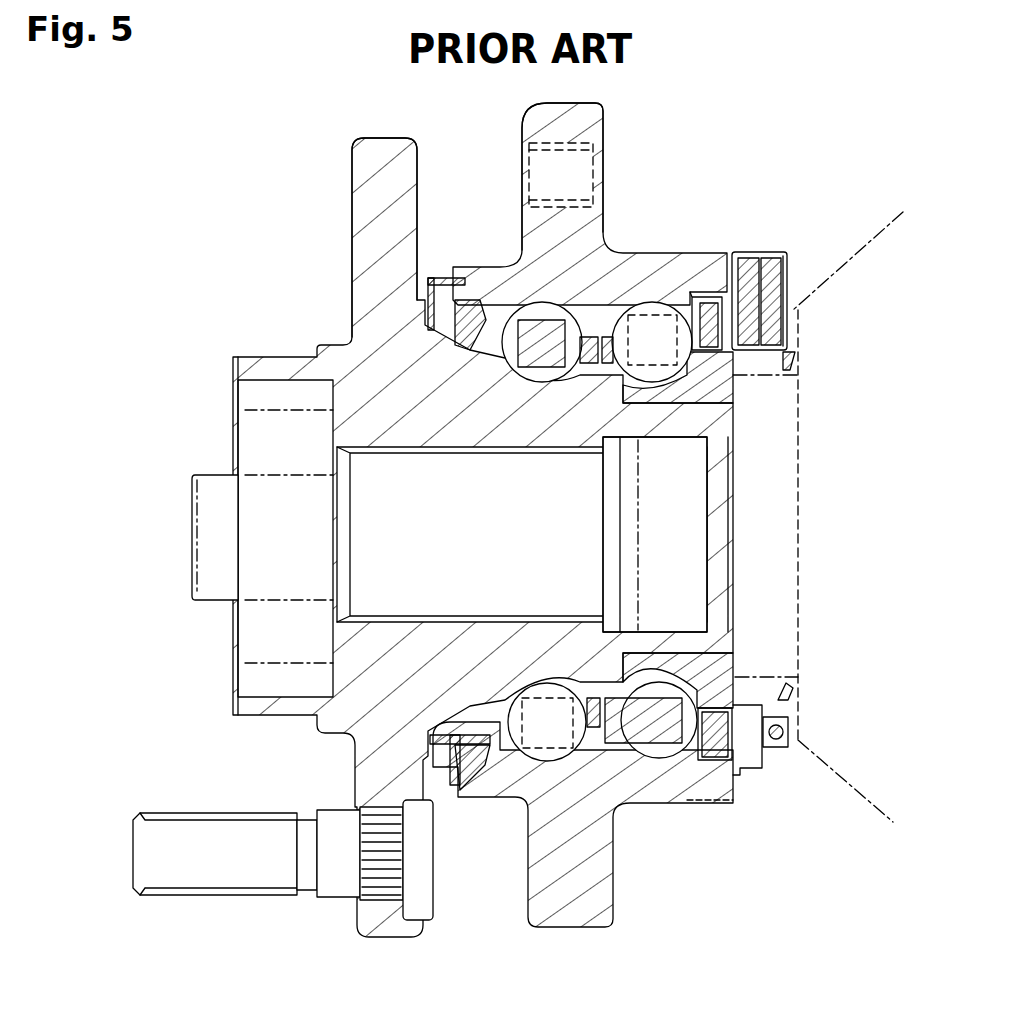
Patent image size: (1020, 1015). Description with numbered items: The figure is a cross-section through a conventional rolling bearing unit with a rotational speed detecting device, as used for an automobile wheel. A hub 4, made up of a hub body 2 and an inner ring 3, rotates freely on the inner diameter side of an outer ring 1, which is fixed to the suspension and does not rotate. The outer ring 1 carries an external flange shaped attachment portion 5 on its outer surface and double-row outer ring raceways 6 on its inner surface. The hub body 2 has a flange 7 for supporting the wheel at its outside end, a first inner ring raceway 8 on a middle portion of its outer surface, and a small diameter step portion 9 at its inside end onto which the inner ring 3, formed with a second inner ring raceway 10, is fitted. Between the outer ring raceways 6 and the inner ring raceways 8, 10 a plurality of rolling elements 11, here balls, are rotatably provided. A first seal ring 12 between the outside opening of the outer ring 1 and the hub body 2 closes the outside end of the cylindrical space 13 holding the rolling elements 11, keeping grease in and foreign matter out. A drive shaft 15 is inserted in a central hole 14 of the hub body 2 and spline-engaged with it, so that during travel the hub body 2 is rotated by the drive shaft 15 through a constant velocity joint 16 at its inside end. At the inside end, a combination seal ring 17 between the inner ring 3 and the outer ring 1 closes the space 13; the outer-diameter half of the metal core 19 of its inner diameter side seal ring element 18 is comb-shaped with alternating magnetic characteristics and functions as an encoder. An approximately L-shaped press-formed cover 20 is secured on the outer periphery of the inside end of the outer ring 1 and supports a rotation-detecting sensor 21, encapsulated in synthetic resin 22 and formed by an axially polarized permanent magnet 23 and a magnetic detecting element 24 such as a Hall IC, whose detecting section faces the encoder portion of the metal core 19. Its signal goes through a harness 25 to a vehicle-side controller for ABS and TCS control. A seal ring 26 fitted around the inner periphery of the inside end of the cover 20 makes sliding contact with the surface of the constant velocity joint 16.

The outer ring 1 is at (583, 515).
The hub body 2 is at (345, 395).
The inner ring 3 is at (710, 385).
The hub 4 is at (433, 537).
The attachment portion 5 is at (536, 128).
The outer ring raceways 6 is at (540, 752).
The flange 7 is at (376, 173).
The first inner ring raceway 8 is at (587, 372).
The small diameter step portion 9 is at (667, 663).
The second inner ring raceway 10 is at (687, 697).
The rolling elements 11 is at (513, 332).
The first seal ring 12 is at (445, 305).
The cylindrical space 13 is at (600, 372).
The central hole 14 is at (418, 447).
The drive shaft 15 is at (330, 727).
The constant velocity joint 16 is at (882, 230).
The combination seal ring 17 is at (733, 800).
The inner diameter side seal ring element 18 is at (738, 677).
The metal core 19 is at (795, 690).
The cover 20 is at (783, 290).
The rotation-detecting sensor 21 is at (800, 310).
The synthetic resin 22 is at (745, 265).
The permanent magnet 23 is at (758, 260).
The magnetic detecting element 24 is at (795, 318).
The harness 25 is at (782, 732).
The seal ring 26 is at (793, 357).